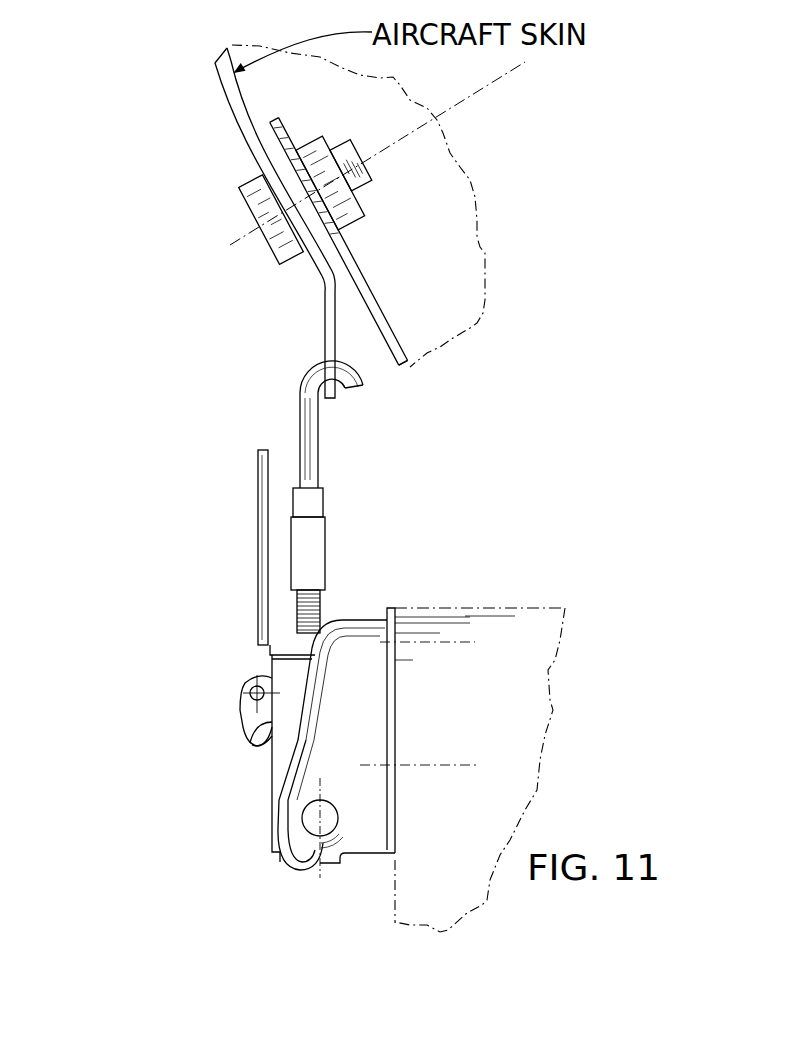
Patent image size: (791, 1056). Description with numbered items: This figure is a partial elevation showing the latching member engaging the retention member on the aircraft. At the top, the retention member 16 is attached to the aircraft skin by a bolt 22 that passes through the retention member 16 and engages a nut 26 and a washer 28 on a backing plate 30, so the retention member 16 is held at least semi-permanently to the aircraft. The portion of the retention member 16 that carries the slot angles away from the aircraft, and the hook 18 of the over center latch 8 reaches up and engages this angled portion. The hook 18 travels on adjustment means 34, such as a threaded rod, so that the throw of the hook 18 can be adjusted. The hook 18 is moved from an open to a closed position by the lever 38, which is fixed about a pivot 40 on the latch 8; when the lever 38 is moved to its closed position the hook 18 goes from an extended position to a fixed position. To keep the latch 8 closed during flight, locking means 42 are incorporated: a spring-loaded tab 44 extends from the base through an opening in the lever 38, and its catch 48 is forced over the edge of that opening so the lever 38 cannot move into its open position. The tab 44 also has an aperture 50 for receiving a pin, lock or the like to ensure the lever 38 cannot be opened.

The over center latch 8 is at (267, 764).
The retention member 16 is at (322, 333).
The hook 18 is at (363, 385).
The bolt 22 is at (237, 215).
The nut 26 is at (362, 213).
The washer 28 is at (347, 240).
The backing plate 30 is at (355, 272).
The adjustment means 34 is at (327, 590).
The lever 38 is at (257, 573).
The pivot 40 is at (312, 837).
The locking means 42 is at (232, 738).
The tab 44 is at (240, 702).
The catch 48 is at (250, 740).
The aperture 50 is at (243, 682).